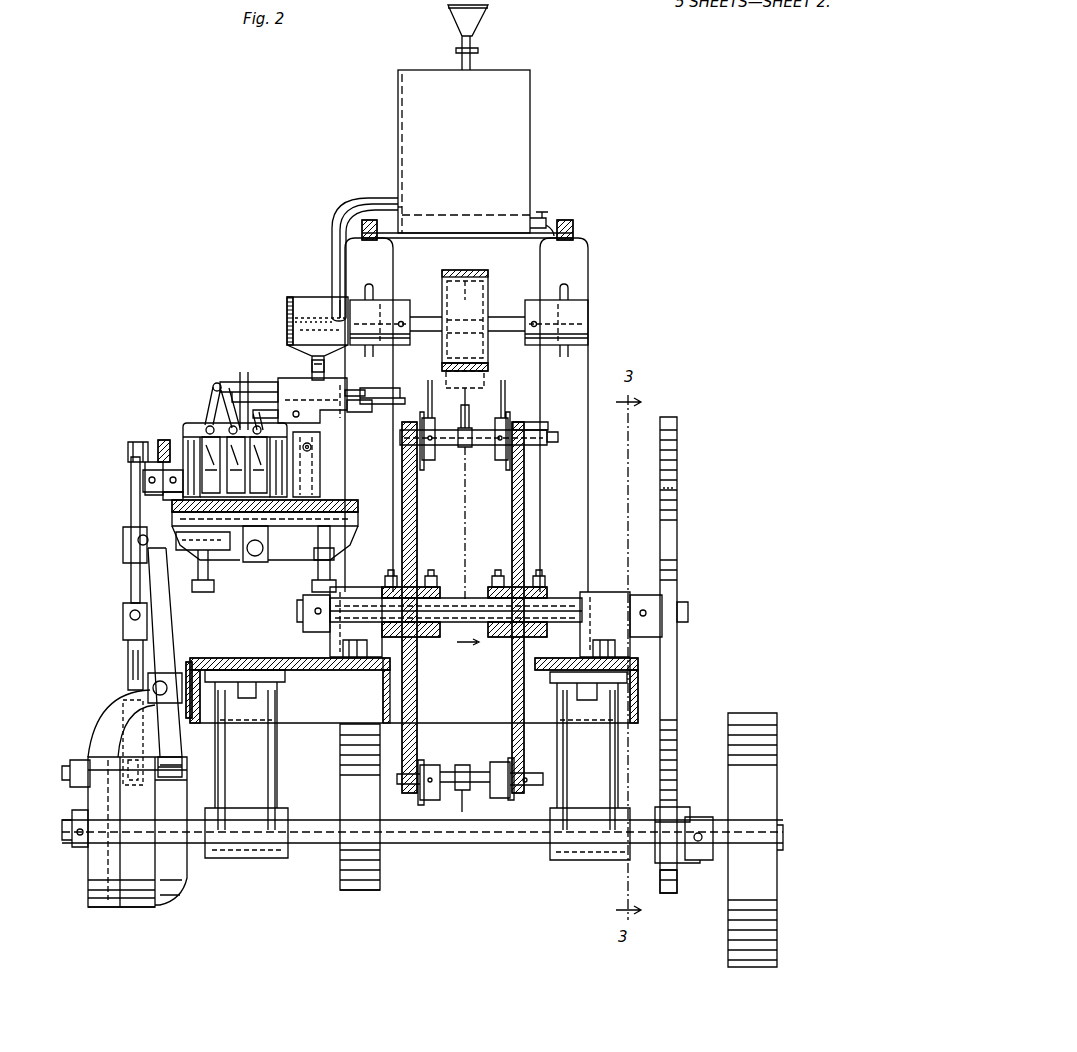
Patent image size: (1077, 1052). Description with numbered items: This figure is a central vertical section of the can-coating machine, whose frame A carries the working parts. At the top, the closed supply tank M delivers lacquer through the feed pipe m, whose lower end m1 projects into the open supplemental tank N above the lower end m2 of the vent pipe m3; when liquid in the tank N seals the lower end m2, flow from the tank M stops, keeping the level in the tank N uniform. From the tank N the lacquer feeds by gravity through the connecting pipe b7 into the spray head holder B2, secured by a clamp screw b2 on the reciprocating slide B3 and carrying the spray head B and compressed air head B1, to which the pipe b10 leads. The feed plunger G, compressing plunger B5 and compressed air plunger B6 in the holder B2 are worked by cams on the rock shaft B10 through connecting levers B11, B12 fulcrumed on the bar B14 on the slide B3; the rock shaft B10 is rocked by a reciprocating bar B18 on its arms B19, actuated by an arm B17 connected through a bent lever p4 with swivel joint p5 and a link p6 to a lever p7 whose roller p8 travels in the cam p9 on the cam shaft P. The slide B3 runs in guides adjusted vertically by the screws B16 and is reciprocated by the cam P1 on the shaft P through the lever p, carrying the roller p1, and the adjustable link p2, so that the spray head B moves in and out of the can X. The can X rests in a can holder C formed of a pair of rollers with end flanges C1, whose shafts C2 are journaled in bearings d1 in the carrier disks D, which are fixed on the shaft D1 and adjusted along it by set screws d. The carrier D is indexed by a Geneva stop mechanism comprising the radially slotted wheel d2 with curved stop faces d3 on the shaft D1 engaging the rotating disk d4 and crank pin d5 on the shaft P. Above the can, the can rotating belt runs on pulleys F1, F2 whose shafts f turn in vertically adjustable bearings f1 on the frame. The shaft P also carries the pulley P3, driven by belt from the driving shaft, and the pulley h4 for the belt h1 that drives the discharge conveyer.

The supply tank M is at (467, 122).
The vent pipe m3 is at (398, 126).
The feed pipe m is at (336, 250).
The lower end of vent pipe m2 is at (336, 318).
The lower end of feed pipe m1 is at (342, 300).
The frame A is at (380, 690).
The vertically adjustable bearings f1 is at (396, 310).
The pulley shafts f is at (592, 320).
The pulley F2 is at (465, 316).
The pulley F1 is at (462, 272).
The compressed air head B1 is at (392, 392).
The spray head B is at (380, 395).
The can X is at (472, 491).
The can holder C is at (440, 454).
The flanges C1 is at (500, 468).
The bearings d1 is at (514, 430).
The roller shafts C2 is at (552, 442).
The carrier D is at (418, 541).
The set screws d is at (494, 588).
The carrier shaft D1 is at (688, 612).
The radially slotted wheel d2 is at (680, 472).
The curved stop faces d3 is at (676, 490).
The cam shaft P is at (426, 842).
The pulley h4 is at (340, 800).
The belt h1 is at (358, 890).
The cam P1 is at (170, 862).
The cam p9 is at (110, 904).
The lever p7 is at (80, 776).
The roller p8 is at (118, 762).
The link p6 is at (128, 742).
The bent lever p4 is at (146, 683).
The swivel joint p5 is at (126, 646).
The lever p is at (176, 622).
The roller p1 is at (182, 758).
The pulley P3 is at (128, 574).
The crank pin d5 is at (672, 808).
The rotating disk d4 is at (668, 894).
The supplemental tank N is at (287, 310).
The compressed air plunger B6 is at (295, 329).
The spray head holder B2 is at (312, 400).
The connecting pipe b7 is at (315, 364).
The pipe b10 is at (348, 408).
The clamp screw b2 is at (312, 447).
The feed plunger G is at (244, 372).
The compressing plunger B5 is at (240, 392).
The connecting lever B11 is at (213, 388).
The connecting lever B12 is at (226, 404).
The bar B14 is at (215, 420).
The reciprocating bar B18 is at (156, 445).
The rock shaft B10 is at (142, 480).
The arm B17 is at (152, 494).
The arms B19 is at (165, 502).
The reciprocating slide B3 is at (310, 512).
The adjusting screws B16 is at (314, 584).
The adjustable link p2 is at (200, 548).